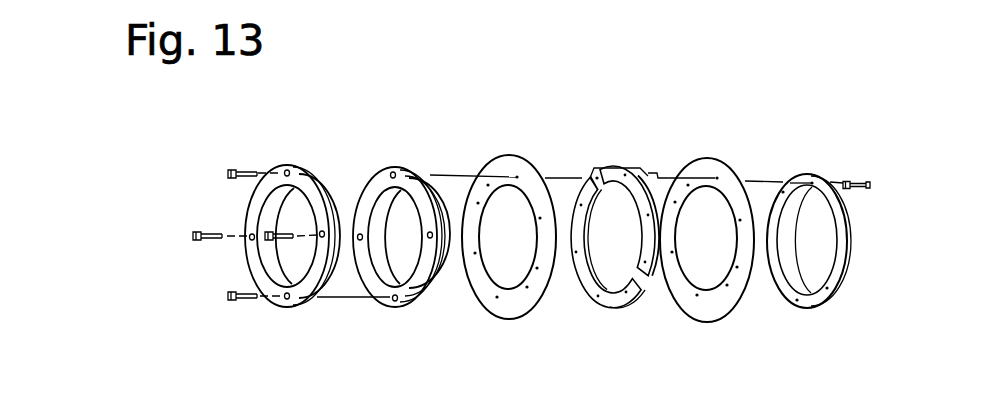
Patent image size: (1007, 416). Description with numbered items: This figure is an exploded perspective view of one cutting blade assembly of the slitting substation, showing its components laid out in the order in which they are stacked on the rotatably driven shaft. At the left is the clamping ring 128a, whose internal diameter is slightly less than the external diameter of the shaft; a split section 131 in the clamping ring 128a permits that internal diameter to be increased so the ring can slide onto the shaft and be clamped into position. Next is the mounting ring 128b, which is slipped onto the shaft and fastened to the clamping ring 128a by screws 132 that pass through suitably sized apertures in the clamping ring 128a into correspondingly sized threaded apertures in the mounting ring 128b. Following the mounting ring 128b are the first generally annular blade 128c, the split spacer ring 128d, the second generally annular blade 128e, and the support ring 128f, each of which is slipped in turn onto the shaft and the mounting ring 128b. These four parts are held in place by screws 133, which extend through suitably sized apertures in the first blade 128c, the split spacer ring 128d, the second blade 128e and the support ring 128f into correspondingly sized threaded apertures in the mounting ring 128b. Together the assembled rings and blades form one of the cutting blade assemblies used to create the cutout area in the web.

The clamping ring 128a is at (306, 164).
The mounting ring 128b is at (418, 167).
The first generally annular blade 128c is at (508, 158).
The split spacer ring 128d is at (615, 160).
The second generally annular blade 128e is at (707, 160).
The support ring 128f is at (803, 175).
The split section 131 is at (308, 300).
The screws 132 is at (227, 173).
The screws 133 is at (872, 185).